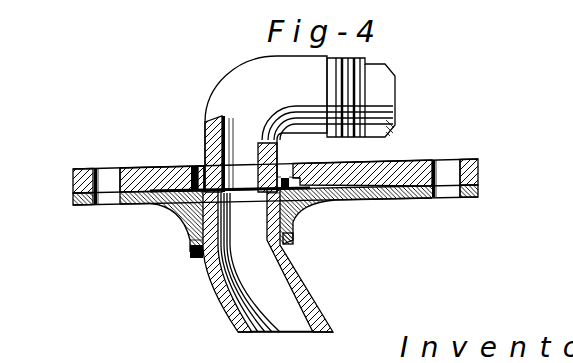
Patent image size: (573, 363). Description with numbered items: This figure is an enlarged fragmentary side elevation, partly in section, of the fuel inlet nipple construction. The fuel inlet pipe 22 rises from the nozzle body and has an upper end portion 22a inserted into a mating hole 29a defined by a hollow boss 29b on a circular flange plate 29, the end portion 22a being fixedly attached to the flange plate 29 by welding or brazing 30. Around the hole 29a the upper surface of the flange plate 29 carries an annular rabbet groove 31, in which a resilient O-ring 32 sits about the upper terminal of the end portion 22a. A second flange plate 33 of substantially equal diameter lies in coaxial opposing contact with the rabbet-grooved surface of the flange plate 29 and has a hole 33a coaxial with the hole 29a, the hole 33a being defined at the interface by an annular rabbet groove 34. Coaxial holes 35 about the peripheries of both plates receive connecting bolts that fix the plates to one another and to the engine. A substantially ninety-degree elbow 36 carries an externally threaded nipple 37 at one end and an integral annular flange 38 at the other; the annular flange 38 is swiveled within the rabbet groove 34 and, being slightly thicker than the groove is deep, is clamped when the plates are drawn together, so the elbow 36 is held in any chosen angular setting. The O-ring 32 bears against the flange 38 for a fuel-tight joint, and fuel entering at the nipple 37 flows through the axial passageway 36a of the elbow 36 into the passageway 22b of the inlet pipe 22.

The fuel inlet pipe 22 is at (332, 314).
The upper end portion of fuel inlet pipe 22a is at (280, 220).
The passageway through inlet pipe 22b is at (290, 314).
The flange plate 29 is at (147, 203).
The mating hole 29a is at (191, 243).
The hollow boss 29b is at (280, 240).
The welding 30 is at (197, 252).
The annular rabbet groove 31 is at (172, 197).
The O-ring 32 is at (192, 226).
The second flange plate 33 is at (138, 178).
The hole 33a is at (193, 172).
The annular rabbet groove 34 is at (188, 185).
The coaxial holes 35 is at (102, 197).
The elbow 36 is at (260, 72).
The axial passageway 36a is at (243, 147).
The externally threaded nipple 37 is at (356, 63).
The annular flange 38 is at (298, 180).